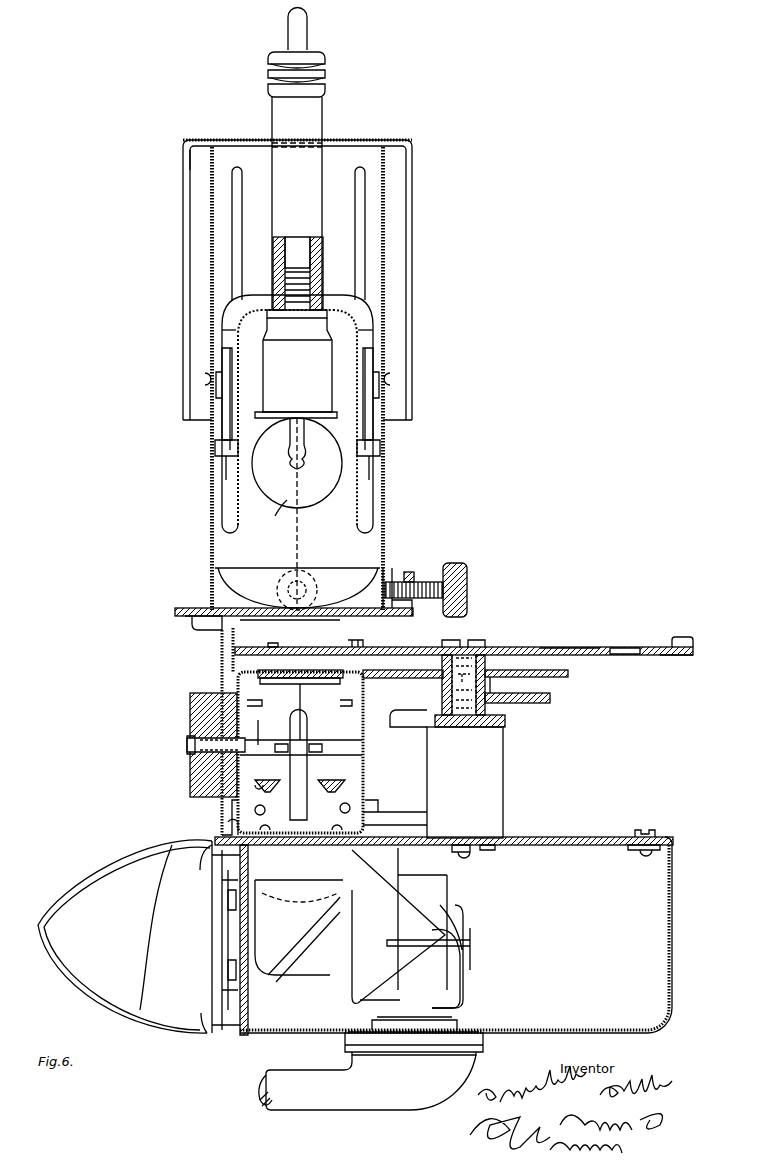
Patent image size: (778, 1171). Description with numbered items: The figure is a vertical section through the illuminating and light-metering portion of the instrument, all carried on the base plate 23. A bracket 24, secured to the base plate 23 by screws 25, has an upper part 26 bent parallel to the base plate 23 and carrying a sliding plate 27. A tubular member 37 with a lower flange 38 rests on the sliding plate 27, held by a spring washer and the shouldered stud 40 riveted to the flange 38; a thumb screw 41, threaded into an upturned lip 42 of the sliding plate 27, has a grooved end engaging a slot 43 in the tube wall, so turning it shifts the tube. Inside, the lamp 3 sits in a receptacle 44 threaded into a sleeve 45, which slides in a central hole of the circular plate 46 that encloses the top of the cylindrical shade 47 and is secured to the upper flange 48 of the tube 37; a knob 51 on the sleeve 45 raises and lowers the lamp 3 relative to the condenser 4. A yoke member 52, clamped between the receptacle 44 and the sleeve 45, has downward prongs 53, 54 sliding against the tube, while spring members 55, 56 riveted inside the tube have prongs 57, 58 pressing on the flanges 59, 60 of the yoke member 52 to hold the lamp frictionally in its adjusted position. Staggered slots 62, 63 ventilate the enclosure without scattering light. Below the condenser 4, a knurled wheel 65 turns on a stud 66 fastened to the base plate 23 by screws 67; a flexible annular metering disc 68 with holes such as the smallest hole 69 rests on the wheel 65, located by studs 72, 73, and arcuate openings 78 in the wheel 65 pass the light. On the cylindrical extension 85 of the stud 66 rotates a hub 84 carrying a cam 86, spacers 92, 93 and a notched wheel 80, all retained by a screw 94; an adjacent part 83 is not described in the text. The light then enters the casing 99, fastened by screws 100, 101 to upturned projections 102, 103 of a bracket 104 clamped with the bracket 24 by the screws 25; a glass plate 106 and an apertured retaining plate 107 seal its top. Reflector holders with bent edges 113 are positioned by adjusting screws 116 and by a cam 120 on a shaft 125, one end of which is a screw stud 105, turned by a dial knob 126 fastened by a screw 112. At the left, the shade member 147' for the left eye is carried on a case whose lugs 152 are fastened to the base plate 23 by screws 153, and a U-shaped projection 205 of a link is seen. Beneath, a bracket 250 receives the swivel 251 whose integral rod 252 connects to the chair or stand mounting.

The knob 51 is at (327, 76).
The sleeve 45 is at (272, 238).
The vertical staggered slot 63 is at (182, 258).
The circular plate 46 is at (245, 140).
The upper flange 48 is at (195, 158).
The tubular member 37 is at (210, 498).
The cylindrical shade 47 is at (190, 386).
The vertical staggered slot 62 is at (243, 252).
The yoke member 52 is at (258, 310).
The flange 59 is at (222, 328).
The flange 60 is at (370, 328).
The prongs 57 is at (222, 350).
The prongs 58 is at (373, 350).
The spring member 55 is at (215, 448).
The spring member 56 is at (380, 448).
The receptacle 44 is at (297, 460).
The lamp 3 is at (274, 515).
The prong 53 is at (238, 508).
The prong 54 is at (358, 508).
The condenser 4 is at (260, 567).
The flange 38 is at (200, 592).
The slot 43 is at (410, 570).
The upturned lip 42 is at (425, 578).
The thumb screw 41 is at (462, 562).
The sliding plate 27 is at (398, 620).
The upper part of bracket 26 is at (330, 624).
The shouldered stud 40 is at (200, 630).
The smallest metering hole 69 is at (282, 648).
The small stud 72 is at (366, 645).
The metering disc 68 is at (595, 647).
The arcuate opening 78 is at (620, 656).
The knurled wheel 65 is at (670, 657).
The small stud 73 is at (678, 636).
The screw 94 is at (482, 640).
The spacer 93 is at (440, 668).
The spacer 92 is at (440, 690).
The hub 84 is at (505, 722).
The notched wheel 80 is at (568, 673).
The cylindrical extension 85 is at (495, 686).
The cam 86 is at (550, 700).
The bracket 83 is at (408, 724).
The stud 66 is at (503, 746).
The screw 101 is at (378, 808).
The casing 99 is at (363, 700).
The retaining plate 107 is at (343, 672).
The transparent glass plate 106 is at (306, 684).
The bent edge 113 is at (275, 702).
The shaft 125 is at (257, 712).
The cam 120 is at (308, 726).
The screw stud 105 is at (301, 746).
The adjusting screw 116 is at (272, 792).
The upturned projection 102 is at (258, 800).
The upturned projection 103 is at (340, 795).
The bracket 104 is at (322, 820).
The dial knob 126 is at (190, 712).
The screw 112 is at (187, 748).
The bracket 24 is at (220, 812).
The screw 100 is at (227, 826).
The screws 25 is at (283, 848).
The base plate 23 is at (565, 835).
The screw 153 is at (638, 828).
The lug 152 is at (636, 852).
The screw 67 is at (470, 855).
The shade member 147' is at (125, 925).
The U-shaped downward projection 205 is at (460, 990).
The swivel 251 is at (457, 1022).
The bracket 250 is at (483, 1045).
The rod 252 is at (290, 1112).